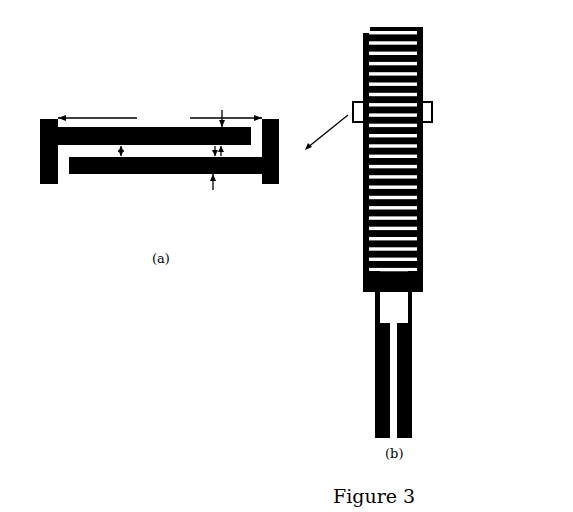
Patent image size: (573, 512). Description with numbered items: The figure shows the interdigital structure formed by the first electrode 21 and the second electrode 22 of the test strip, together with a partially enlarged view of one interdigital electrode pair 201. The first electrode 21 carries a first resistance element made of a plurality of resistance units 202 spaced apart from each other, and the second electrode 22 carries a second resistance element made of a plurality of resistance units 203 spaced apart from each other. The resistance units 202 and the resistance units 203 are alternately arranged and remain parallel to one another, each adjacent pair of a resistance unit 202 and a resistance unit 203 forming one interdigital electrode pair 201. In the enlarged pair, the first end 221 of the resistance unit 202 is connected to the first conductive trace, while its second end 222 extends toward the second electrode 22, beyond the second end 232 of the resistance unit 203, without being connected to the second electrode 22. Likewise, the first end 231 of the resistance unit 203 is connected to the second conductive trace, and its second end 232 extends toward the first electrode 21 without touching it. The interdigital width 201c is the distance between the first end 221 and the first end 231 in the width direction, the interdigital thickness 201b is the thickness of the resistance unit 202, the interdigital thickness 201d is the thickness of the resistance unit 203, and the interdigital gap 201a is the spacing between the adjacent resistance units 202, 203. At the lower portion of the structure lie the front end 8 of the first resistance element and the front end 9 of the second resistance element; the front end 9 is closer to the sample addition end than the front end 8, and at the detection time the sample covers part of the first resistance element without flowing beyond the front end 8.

The interdigital electrode pair 201 is at (432, 108).
The interdigital gap 201a is at (130, 174).
The interdigital thickness 201b is at (232, 124).
The interdigital width 201c is at (160, 118).
The interdigital thickness 201d is at (214, 192).
The resistance unit 202 is at (137, 127).
The resistance unit 203 is at (180, 174).
The first end 221 is at (56, 121).
The second end 222 is at (259, 124).
The first end 231 is at (260, 174).
The second end 232 is at (70, 174).
The first electrode 21 is at (371, 293).
The second electrode 22 is at (416, 293).
The front end of the first resistance element 8 is at (394, 270).
The front end of the second resistance element 9 is at (404, 270).